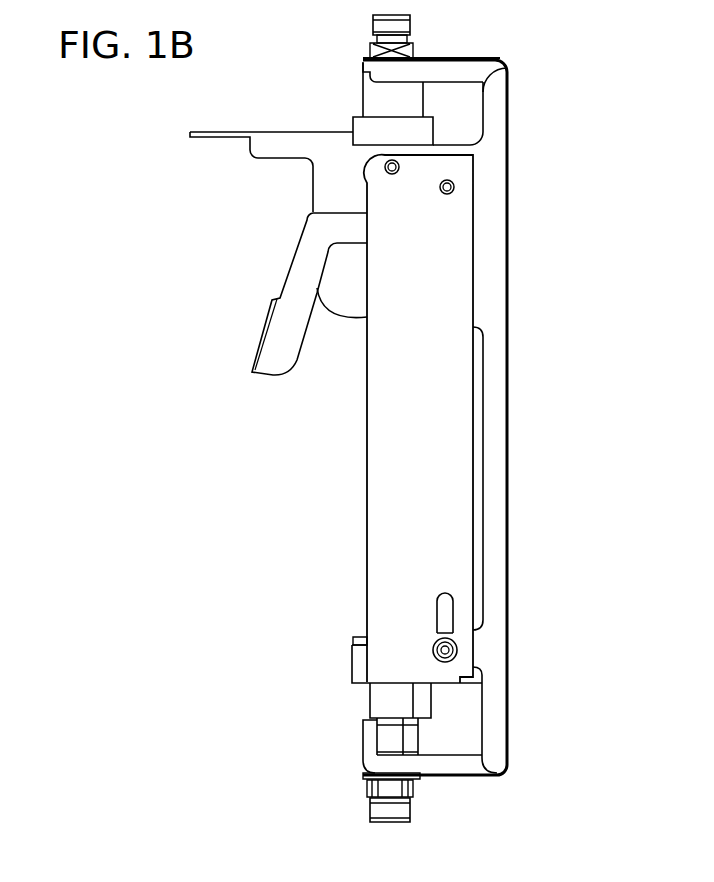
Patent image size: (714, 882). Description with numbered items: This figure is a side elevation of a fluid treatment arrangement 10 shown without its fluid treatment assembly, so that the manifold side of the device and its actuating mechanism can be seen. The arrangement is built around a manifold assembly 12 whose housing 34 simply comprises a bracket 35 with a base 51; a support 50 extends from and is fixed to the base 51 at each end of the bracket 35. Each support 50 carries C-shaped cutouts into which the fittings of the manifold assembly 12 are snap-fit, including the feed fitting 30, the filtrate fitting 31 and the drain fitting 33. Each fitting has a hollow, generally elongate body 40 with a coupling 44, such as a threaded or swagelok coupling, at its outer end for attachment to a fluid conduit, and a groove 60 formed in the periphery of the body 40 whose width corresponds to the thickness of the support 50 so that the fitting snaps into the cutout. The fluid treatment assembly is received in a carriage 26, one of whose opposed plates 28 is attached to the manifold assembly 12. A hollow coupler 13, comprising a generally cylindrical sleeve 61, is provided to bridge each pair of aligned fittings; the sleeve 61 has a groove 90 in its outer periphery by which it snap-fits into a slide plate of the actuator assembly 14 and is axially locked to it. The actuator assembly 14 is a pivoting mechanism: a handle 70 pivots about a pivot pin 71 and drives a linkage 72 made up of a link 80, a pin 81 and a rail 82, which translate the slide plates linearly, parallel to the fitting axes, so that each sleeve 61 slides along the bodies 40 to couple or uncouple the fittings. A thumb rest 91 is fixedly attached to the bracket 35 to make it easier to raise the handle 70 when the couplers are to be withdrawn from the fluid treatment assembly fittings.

The fluid treatment arrangement 10 is at (266, 572).
The manifold assembly 12 is at (505, 62).
The hollow coupler 13 is at (370, 130).
The actuator assembly 14 is at (420, 240).
The carriage 26 is at (360, 638).
The plate 28 is at (363, 637).
The feed fitting 30 is at (362, 733).
The filtrate fitting 31 is at (390, 97).
The drain fitting 33 is at (400, 732).
The housing 34 is at (508, 82).
The bracket 35 is at (508, 421).
The fitting body 40 is at (411, 95).
The coupling 44 is at (375, 22).
The support 50 is at (465, 60).
The base 51 is at (508, 316).
The groove 60 is at (363, 70).
The sleeve 61 is at (413, 140).
The handle 70 is at (270, 377).
The pivot pin 71 is at (392, 167).
The linkage 72 is at (420, 277).
The link 80 is at (420, 373).
The pin 81 is at (457, 647).
The rail 82 is at (453, 612).
The groove 90 is at (353, 683).
The thumb rest 91 is at (217, 132).